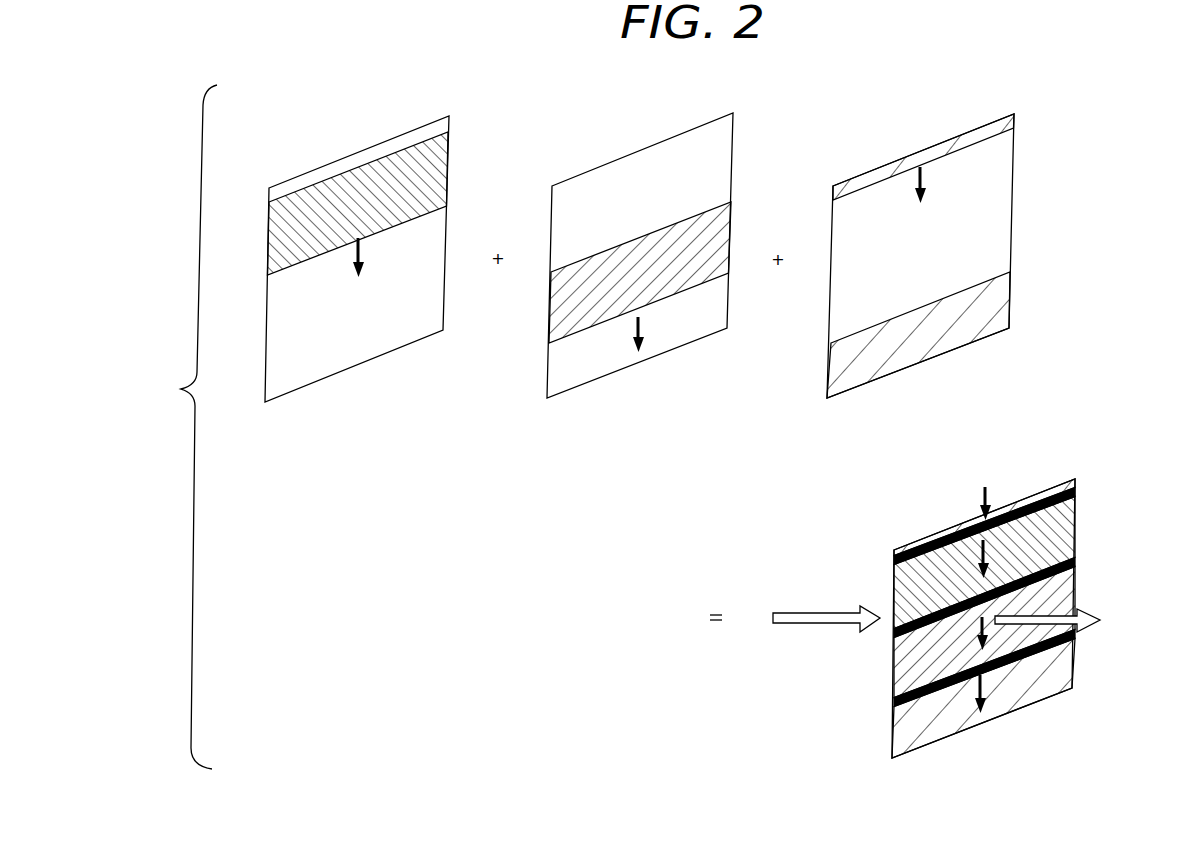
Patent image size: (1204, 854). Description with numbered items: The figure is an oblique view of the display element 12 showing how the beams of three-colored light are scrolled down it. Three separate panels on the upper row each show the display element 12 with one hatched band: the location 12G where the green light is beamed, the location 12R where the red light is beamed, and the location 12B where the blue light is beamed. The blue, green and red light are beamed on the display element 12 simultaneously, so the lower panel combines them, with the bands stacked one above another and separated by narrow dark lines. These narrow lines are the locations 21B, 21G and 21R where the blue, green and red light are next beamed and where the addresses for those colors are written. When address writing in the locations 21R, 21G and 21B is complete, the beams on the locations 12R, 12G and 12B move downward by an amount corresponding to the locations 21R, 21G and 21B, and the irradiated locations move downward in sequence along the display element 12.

The display element 12 is at (322, 173).
The green light beamed location 12G is at (447, 157).
The red light beamed location 12R is at (725, 228).
The blue light beamed location 12B is at (1010, 302).
The next blue light beamed location 21B is at (1077, 492).
The next green light beamed location 21G is at (1077, 562).
The next red light beamed location 21R is at (1077, 641).